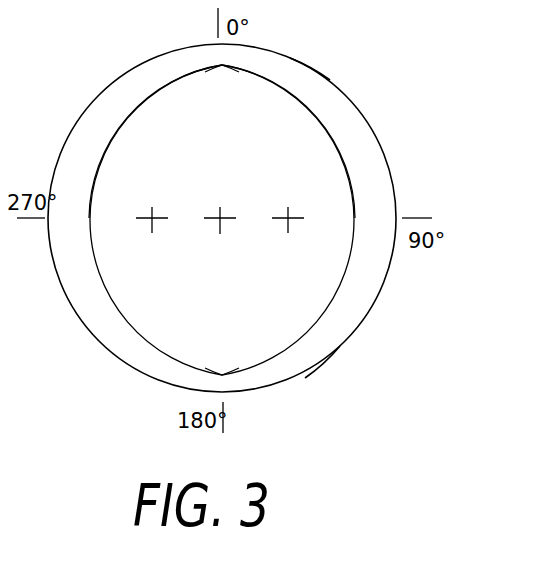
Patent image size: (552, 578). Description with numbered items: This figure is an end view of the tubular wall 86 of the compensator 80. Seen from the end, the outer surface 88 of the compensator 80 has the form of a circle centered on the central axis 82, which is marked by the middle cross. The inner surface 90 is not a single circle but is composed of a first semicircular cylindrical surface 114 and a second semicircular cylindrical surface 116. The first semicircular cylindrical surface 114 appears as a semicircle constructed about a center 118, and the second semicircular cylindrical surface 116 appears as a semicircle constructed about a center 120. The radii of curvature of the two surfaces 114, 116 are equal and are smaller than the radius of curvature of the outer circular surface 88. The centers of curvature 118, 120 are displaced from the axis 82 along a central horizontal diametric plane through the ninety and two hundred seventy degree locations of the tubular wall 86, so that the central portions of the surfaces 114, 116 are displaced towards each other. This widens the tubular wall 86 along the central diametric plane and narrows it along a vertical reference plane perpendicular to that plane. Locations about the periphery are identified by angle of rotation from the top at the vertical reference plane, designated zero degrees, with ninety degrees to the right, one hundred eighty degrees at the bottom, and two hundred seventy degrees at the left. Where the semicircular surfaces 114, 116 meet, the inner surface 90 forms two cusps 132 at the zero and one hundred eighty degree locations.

The compensator 80 is at (368, 100).
The central axis 82 is at (220, 225).
The tubular wall 86 is at (322, 362).
The outer surface 88 is at (312, 71).
The inner surface 90 is at (318, 325).
The first semicircular cylindrical surface 114 is at (322, 130).
The second semicircular cylindrical surface 116 is at (118, 134).
The center 118 is at (153, 225).
The center 120 is at (290, 225).
The cusps 132 is at (222, 66).